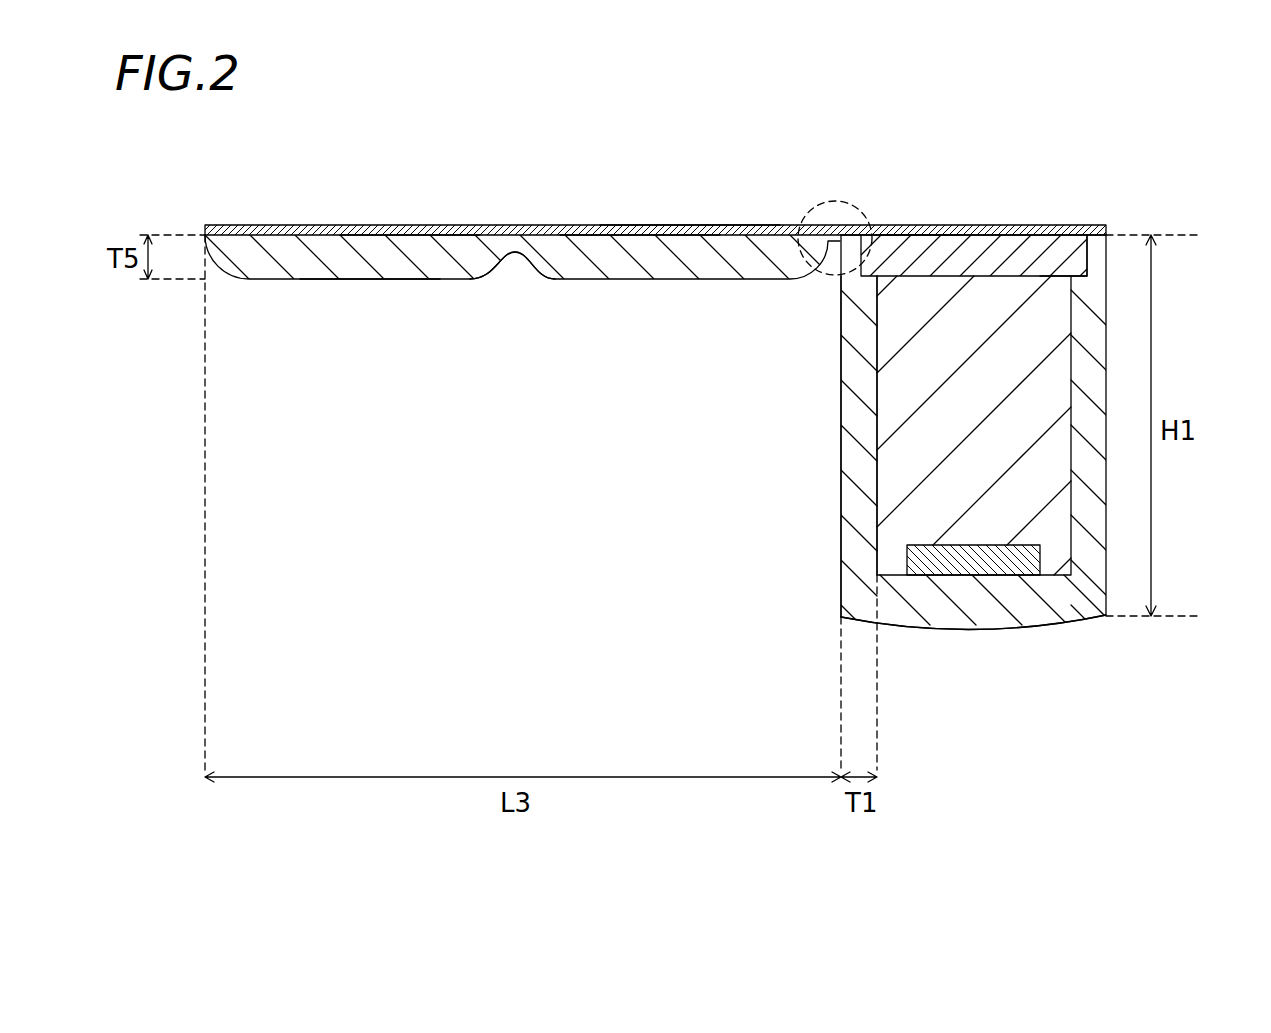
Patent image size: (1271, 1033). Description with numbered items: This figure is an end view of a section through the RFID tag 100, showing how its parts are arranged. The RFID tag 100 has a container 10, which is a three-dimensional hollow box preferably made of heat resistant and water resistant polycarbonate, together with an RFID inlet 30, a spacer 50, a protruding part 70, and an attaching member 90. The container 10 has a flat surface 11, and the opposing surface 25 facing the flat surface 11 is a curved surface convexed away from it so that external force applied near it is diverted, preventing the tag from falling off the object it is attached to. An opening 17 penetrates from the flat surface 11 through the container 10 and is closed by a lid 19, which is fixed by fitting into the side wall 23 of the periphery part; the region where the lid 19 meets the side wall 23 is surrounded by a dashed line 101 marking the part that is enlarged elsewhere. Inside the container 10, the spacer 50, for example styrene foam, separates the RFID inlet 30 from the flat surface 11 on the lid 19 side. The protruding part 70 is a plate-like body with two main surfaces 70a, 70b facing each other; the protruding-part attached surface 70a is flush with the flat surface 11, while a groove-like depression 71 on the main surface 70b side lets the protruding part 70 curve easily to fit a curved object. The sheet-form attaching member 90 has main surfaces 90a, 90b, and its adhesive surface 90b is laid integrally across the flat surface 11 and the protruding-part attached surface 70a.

The RFID tag 100 is at (1149, 116).
The container 10 is at (1007, 617).
The flat surface 11 is at (924, 224).
The opening 17 is at (993, 250).
The lid 19 is at (1058, 247).
The side wall 23 is at (855, 412).
The opposing surface 25 is at (974, 641).
The RFID inlet 30 is at (932, 562).
The spacer 50 is at (1057, 527).
The protruding part 70 is at (296, 250).
The protruding-part attached surface 70a is at (419, 226).
The main surface 70b is at (364, 289).
The depression 71 is at (518, 313).
The attaching member 90 is at (238, 225).
The main surface 90a is at (687, 219).
The adhesive surface 90b is at (641, 245).
The dashed line 101 is at (833, 201).